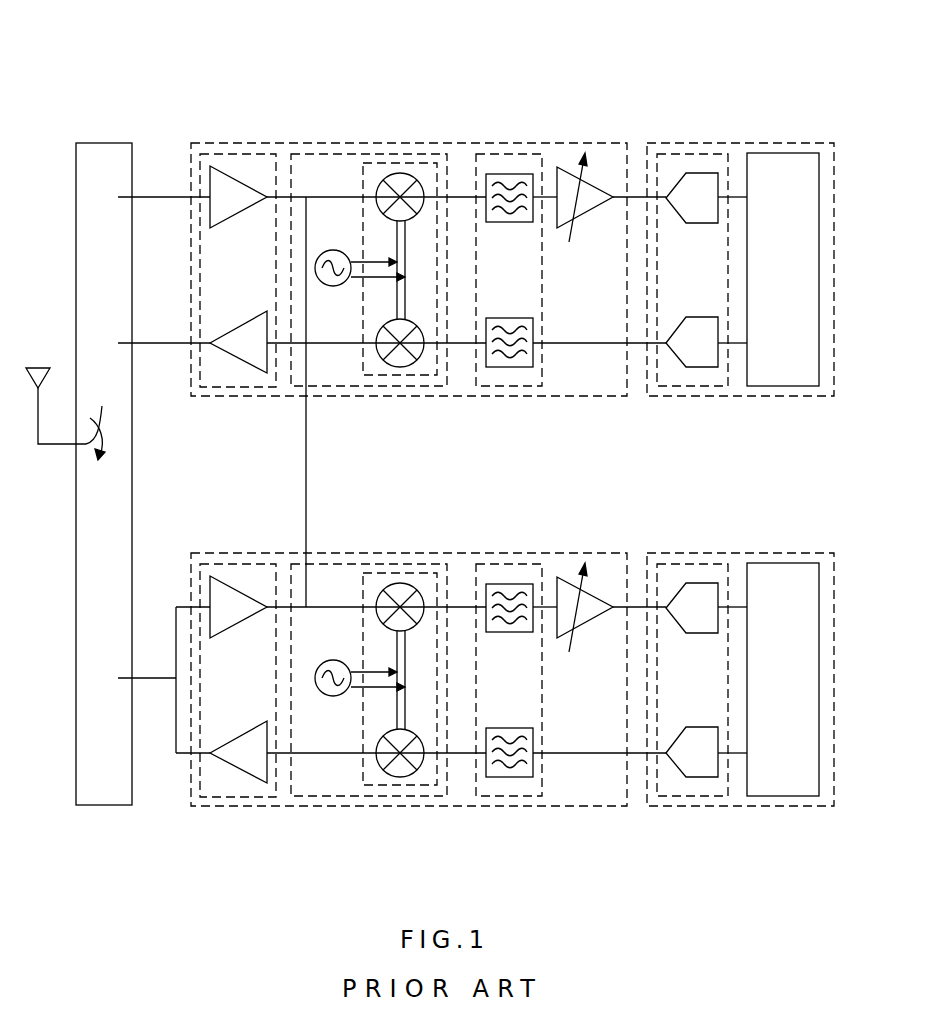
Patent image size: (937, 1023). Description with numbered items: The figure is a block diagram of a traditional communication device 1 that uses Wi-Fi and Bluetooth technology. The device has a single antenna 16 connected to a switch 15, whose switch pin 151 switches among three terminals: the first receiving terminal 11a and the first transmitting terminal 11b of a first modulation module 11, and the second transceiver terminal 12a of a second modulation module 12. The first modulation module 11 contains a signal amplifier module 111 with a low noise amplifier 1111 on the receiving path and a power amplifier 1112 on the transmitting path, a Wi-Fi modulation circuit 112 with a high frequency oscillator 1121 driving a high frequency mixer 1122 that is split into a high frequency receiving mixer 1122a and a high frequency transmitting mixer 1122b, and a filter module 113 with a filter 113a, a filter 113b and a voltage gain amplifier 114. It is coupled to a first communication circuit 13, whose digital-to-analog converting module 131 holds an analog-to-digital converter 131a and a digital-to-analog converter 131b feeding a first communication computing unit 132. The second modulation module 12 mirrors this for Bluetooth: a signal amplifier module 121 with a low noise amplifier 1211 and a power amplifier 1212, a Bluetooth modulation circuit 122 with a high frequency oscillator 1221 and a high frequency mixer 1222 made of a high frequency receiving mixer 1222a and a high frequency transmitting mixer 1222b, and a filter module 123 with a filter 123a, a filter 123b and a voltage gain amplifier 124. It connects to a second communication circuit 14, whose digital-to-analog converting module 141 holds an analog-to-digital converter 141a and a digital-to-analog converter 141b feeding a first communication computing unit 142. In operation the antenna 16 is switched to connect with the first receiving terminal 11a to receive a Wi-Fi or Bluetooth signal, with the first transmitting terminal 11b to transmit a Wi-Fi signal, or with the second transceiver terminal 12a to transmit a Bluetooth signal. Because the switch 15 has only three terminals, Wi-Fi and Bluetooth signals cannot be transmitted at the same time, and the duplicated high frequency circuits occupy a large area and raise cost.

The communication device 1 is at (67, 39).
The switch 15 is at (103, 143).
The antenna 16 is at (38, 368).
The switch pin 151 is at (103, 417).
The first receiving terminal 11a is at (191, 197).
The first transmitting terminal 11b is at (191, 343).
The second transceiver terminal 12a is at (176, 678).
The first modulation module 11 is at (610, 143).
The signal amplifier module 111 is at (220, 143).
The low noise amplifier 1111 is at (248, 183).
The power amplifier 1112 is at (242, 325).
The Wi-Fi modulation circuit 112 is at (314, 154).
The high frequency oscillator 1121 is at (333, 286).
The high frequency mixer 1122 is at (382, 162).
The high frequency receiving mixer 1122a is at (405, 173).
The high frequency transmitting mixer 1122b is at (405, 367).
The filter module 113 is at (482, 154).
The filter 113a is at (523, 174).
The filter 113b is at (510, 367).
The voltage gain amplifier 114 is at (593, 213).
The first communication circuit 13 is at (795, 143).
The digital-to-analog converting module 131 is at (672, 154).
The analog-to-digital converter 131a is at (712, 173).
The digital-to-analog converter 131b is at (700, 368).
The first communication computing unit 132 is at (785, 386).
The second modulation module 12 is at (409, 641).
The signal amplifier module 121 is at (238, 641).
The low noise amplifier 1211 is at (244, 573).
The power amplifier 1212 is at (232, 788).
The Bluetooth modulation circuit 122 is at (369, 640).
The high frequency oscillator 1221 is at (353, 758).
The high frequency mixer 1222 is at (396, 640).
The high frequency receiving mixer 1222a is at (420, 569).
The high frequency transmitting mixer 1222b is at (410, 792).
The filter module 123 is at (502, 640).
The filter 123a is at (521, 565).
The filter 123b is at (506, 792).
The voltage gain amplifier 124 is at (586, 626).
The second communication circuit 14 is at (740, 641).
The digital-to-analog converting module 141 is at (692, 640).
The analog-to-digital converter 141a is at (706, 565).
The digital-to-analog converter 141b is at (692, 795).
The first communication computing unit 142 is at (783, 713).